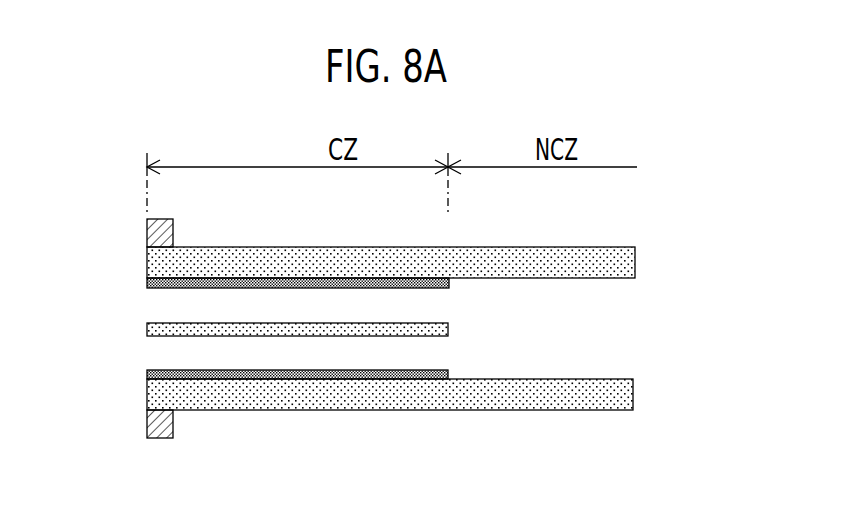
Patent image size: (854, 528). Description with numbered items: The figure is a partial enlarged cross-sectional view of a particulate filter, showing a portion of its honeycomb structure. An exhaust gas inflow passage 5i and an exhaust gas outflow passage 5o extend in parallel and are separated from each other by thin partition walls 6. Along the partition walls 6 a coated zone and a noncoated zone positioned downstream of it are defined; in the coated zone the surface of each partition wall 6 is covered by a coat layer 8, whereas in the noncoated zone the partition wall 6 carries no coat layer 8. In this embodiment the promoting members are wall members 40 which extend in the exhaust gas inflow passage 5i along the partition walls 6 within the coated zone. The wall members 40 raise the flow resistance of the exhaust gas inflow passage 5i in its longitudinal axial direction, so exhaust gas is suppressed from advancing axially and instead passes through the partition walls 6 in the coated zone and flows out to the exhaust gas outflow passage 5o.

The exhaust gas inflow passage 5i is at (574, 344).
The exhaust gas outflow passage 5o is at (575, 458).
The partition wall 6 is at (600, 257).
The coat layer 8 is at (160, 372).
The wall member 40 is at (163, 325).